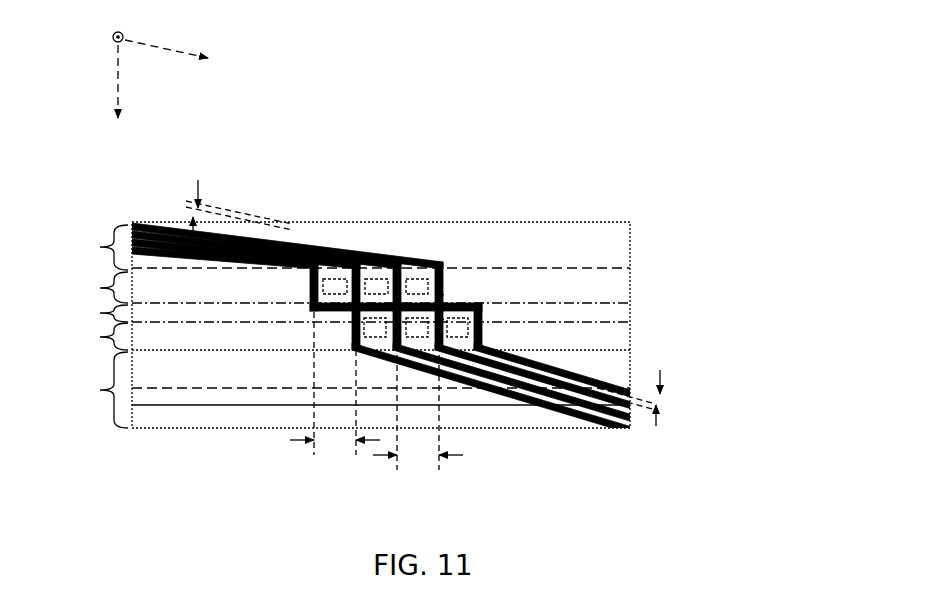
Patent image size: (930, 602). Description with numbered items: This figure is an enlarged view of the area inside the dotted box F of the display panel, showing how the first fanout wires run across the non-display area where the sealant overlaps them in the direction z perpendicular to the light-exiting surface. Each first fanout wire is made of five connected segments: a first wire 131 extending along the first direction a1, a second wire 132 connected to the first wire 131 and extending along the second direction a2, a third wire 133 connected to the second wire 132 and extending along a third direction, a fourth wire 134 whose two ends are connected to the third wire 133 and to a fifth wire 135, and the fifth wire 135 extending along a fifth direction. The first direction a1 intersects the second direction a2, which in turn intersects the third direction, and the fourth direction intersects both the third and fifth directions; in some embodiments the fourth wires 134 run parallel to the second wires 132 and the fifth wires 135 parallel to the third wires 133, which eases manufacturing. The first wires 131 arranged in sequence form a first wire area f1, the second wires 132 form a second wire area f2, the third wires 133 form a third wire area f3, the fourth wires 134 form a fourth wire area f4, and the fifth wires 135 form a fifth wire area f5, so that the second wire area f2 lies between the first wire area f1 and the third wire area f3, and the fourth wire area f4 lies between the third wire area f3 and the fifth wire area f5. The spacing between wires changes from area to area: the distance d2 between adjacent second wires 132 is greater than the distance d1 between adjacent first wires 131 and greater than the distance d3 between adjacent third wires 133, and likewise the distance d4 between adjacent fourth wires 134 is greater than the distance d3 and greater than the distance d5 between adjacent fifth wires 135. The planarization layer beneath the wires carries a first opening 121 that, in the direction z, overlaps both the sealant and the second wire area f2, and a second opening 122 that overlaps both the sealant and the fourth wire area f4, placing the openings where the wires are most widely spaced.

The dotted box F is at (142, 223).
The first wire area f1 is at (95, 247).
The second wire area f2 is at (95, 288).
The third wire area f3 is at (95, 313).
The fourth wire area f4 is at (95, 338).
The fifth wire area f5 is at (95, 390).
The first opening 121 is at (383, 278).
The second opening 122 is at (462, 338).
The first wire 131 is at (402, 250).
The second wire 132 is at (445, 290).
The third wire 133 is at (463, 307).
The fourth wire 134 is at (482, 332).
The fifth wire 135 is at (630, 384).
The distance between adjacent first wires d1 is at (222, 208).
The distance between adjacent second wires d2 is at (335, 378).
The distance between adjacent third wires d3 is at (449, 327).
The distance between adjacent fourth wires d4 is at (418, 415).
The distance between adjacent fifth wires d5 is at (658, 401).
The first direction a1 is at (238, 59).
The second direction a2 is at (121, 106).
The direction perpendicular to light-exiting surface z is at (117, 25).